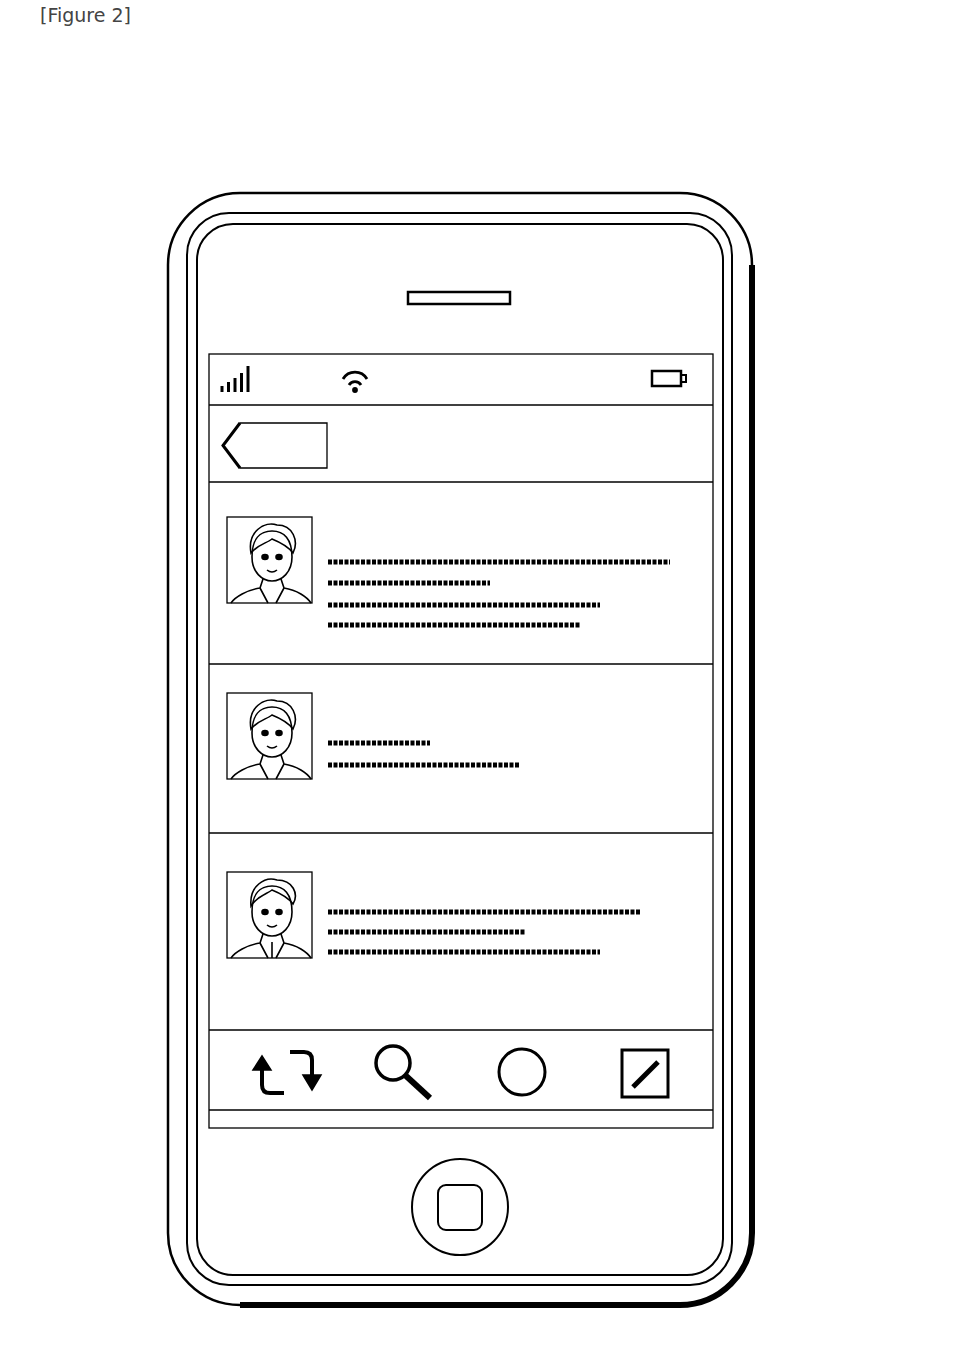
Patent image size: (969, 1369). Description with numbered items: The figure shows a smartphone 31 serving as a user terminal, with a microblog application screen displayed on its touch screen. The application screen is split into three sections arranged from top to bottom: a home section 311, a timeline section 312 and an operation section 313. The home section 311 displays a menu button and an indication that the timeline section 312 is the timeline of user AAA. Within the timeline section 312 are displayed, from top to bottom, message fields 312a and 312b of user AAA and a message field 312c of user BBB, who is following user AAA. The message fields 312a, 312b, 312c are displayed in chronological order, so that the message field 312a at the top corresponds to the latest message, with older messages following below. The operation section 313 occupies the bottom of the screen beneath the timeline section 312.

The smartphone 31 is at (338, 146).
The home section 311 is at (770, 368).
The timeline section 312 is at (460, 758).
The message field 312a is at (163, 492).
The message field 312b is at (163, 670).
The message field 312c is at (163, 843).
The operation section 313 is at (770, 1030).